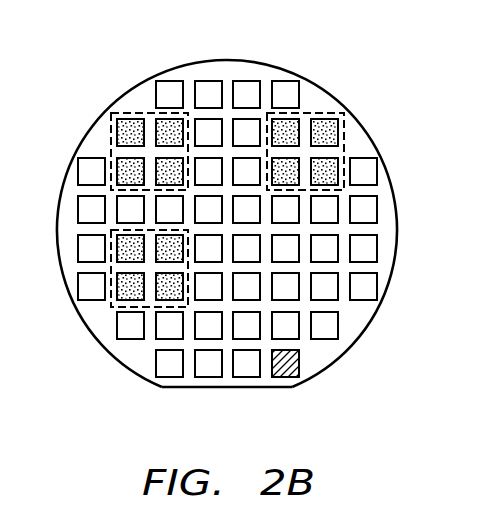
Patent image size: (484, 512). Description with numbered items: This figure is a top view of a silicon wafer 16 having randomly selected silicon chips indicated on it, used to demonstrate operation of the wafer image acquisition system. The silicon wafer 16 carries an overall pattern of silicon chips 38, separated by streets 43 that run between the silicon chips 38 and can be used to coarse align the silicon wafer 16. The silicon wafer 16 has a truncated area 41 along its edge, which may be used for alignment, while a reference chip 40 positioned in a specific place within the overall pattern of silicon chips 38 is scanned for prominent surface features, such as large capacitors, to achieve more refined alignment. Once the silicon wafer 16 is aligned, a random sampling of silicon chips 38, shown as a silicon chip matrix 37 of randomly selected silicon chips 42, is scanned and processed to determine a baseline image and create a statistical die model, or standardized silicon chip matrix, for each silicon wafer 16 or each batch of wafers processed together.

The silicon wafer 16 is at (372, 61).
The silicon chip matrix 37 is at (125, 113).
The silicon chip 38 is at (203, 80).
The reference chip 40 is at (300, 363).
The truncated area 41 is at (240, 389).
The randomly selected silicon chips 42 is at (118, 142).
The streets 43 is at (228, 68).